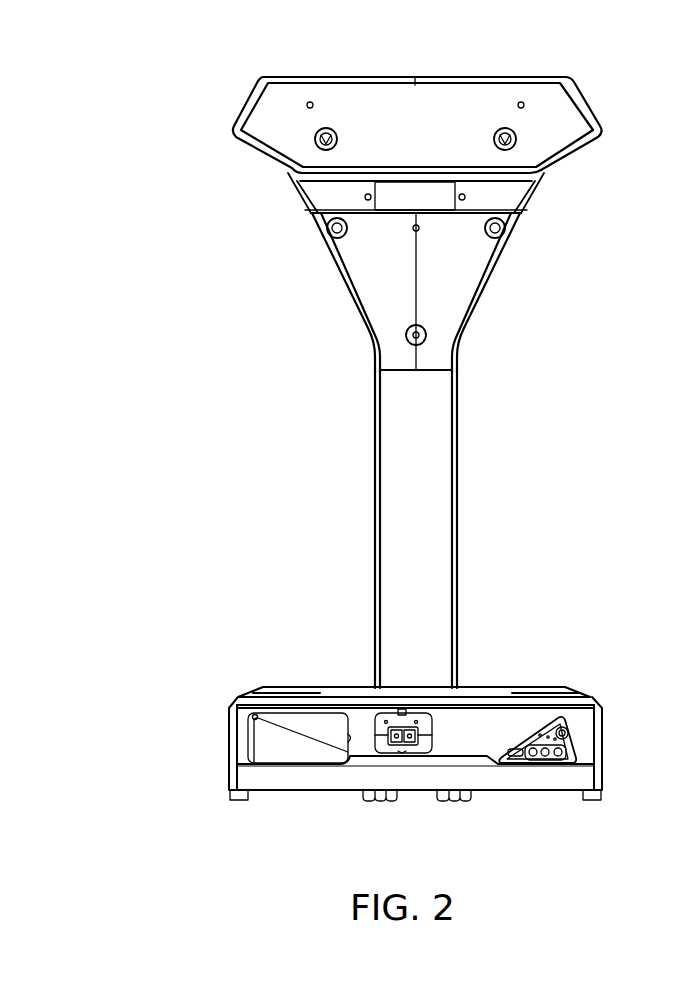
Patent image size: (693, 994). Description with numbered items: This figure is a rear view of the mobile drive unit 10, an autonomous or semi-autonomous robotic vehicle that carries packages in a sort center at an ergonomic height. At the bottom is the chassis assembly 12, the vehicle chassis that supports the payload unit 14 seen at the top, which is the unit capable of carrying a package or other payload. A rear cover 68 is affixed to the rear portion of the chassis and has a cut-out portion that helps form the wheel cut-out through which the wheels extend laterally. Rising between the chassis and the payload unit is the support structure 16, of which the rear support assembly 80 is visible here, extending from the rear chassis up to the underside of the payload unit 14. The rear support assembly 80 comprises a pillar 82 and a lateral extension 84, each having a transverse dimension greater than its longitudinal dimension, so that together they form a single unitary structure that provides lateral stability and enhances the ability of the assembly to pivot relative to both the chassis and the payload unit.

The mobile drive unit 10 is at (197, 272).
The chassis assembly 12 is at (226, 748).
The payload unit 14 is at (236, 110).
The support structure 16 is at (578, 185).
The rear cover 68 is at (283, 778).
The rear support assembly 80 is at (395, 605).
The pillar 82 is at (395, 497).
The lateral extension 84 is at (372, 292).